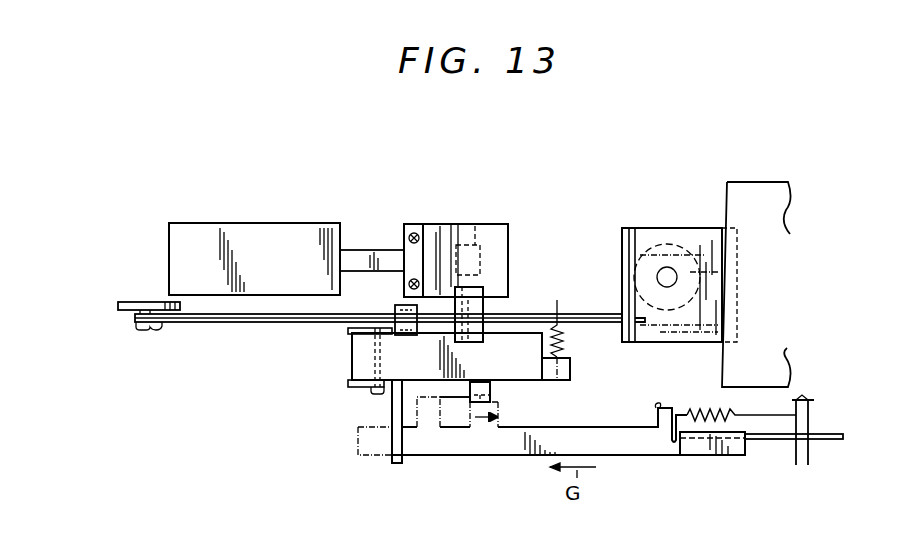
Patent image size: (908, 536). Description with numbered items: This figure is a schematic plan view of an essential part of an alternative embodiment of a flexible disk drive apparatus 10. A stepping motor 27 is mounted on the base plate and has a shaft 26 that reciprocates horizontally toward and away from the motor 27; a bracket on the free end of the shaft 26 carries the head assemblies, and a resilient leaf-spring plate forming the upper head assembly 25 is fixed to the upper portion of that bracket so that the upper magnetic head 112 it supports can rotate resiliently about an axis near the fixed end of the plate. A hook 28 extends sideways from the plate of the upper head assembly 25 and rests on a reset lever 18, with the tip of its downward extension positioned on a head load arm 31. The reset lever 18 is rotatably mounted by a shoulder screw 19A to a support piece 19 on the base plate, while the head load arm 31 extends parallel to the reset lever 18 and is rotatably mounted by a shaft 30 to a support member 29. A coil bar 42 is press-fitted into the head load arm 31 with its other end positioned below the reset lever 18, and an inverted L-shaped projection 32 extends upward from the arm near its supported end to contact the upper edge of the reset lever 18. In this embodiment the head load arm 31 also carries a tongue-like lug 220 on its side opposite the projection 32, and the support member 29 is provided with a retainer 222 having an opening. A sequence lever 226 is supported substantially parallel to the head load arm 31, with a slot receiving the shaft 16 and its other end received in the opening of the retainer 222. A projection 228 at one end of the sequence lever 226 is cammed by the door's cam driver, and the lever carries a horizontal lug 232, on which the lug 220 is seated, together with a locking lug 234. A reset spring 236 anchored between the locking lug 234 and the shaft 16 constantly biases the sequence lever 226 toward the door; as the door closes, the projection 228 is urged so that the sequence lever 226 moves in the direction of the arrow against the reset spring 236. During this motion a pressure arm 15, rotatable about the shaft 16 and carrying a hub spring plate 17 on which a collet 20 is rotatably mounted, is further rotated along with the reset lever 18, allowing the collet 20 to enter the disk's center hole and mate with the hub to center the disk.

The apparatus 10 is at (600, 277).
The pressure arm 15 is at (777, 212).
The shaft 16 is at (805, 466).
The hub spring plate 17 is at (668, 228).
The reset lever 18 is at (225, 322).
The support piece 19 is at (140, 302).
The shoulder screw 19A is at (142, 328).
The collet 20 is at (700, 294).
The upper head assembly 25 is at (436, 232).
The shaft 26 is at (378, 250).
The stepping motor 27 is at (268, 232).
The hook 28 is at (472, 310).
The support member 29 is at (352, 386).
The shaft 30 is at (372, 393).
The head load arm 31 is at (352, 354).
The inverted L-shaped projection 32 is at (395, 310).
The coil bar 42 is at (566, 340).
The upper magnetic head 112 is at (474, 240).
The tongue-like lug 220 is at (470, 410).
The retainer 222 is at (397, 463).
The sequence lever 226 is at (636, 446).
The projection 228 is at (838, 440).
The lug 232 is at (452, 405).
The locking lug 234 is at (668, 408).
The reset spring 236 is at (722, 432).